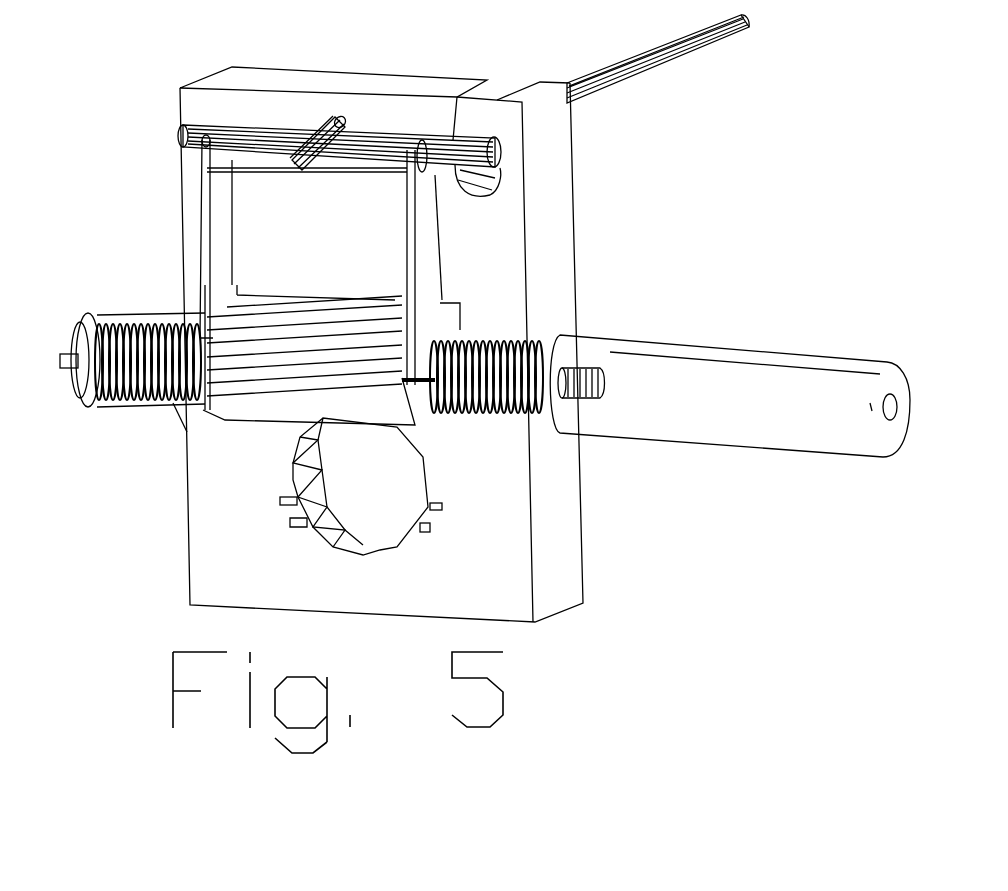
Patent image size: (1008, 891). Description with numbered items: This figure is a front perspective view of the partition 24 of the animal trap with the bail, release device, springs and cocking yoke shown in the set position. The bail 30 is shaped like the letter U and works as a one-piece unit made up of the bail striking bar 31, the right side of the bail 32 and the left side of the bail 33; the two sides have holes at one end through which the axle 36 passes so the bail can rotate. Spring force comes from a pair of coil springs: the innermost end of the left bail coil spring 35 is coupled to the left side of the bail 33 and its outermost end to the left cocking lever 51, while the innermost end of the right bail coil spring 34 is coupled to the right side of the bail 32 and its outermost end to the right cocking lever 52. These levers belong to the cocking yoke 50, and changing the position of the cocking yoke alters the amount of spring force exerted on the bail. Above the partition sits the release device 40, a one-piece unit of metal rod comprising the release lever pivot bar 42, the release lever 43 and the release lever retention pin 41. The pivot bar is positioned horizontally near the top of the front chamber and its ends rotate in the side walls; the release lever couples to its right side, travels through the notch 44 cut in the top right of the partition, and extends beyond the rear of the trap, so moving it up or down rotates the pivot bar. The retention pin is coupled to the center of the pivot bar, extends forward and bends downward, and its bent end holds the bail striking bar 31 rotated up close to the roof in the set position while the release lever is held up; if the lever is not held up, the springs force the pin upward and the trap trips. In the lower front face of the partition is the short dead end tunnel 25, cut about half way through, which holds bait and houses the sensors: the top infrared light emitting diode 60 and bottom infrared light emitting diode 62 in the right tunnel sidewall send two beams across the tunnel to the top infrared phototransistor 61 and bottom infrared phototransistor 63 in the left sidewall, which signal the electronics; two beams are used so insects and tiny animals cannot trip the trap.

The partition 24 is at (350, 567).
The short dead end tunnel 25 is at (305, 455).
The bail 30 is at (352, 272).
The bail striking bar 31 is at (253, 167).
The right side of the bail 32 is at (423, 277).
The left side of the bail 33 is at (213, 273).
The right bail coil spring 34 is at (520, 423).
The left bail coil spring 35 is at (190, 438).
The axle 36 is at (610, 390).
The release device 40 is at (170, 131).
The release lever retention pin 41 is at (323, 118).
The release lever pivot bar 42 is at (496, 153).
The release lever 43 is at (703, 50).
The notch in the partition for the release lever 44 is at (473, 190).
The cocking yoke 50 is at (786, 380).
The left cocking lever 51 is at (107, 313).
The right cocking lever 52 is at (733, 387).
The top infrared light emitting diode 60 is at (442, 512).
The top infrared phototransistor 61 is at (280, 500).
The bottom infrared light emitting diode 62 is at (425, 532).
The bottom infrared phototransistor 63 is at (290, 525).